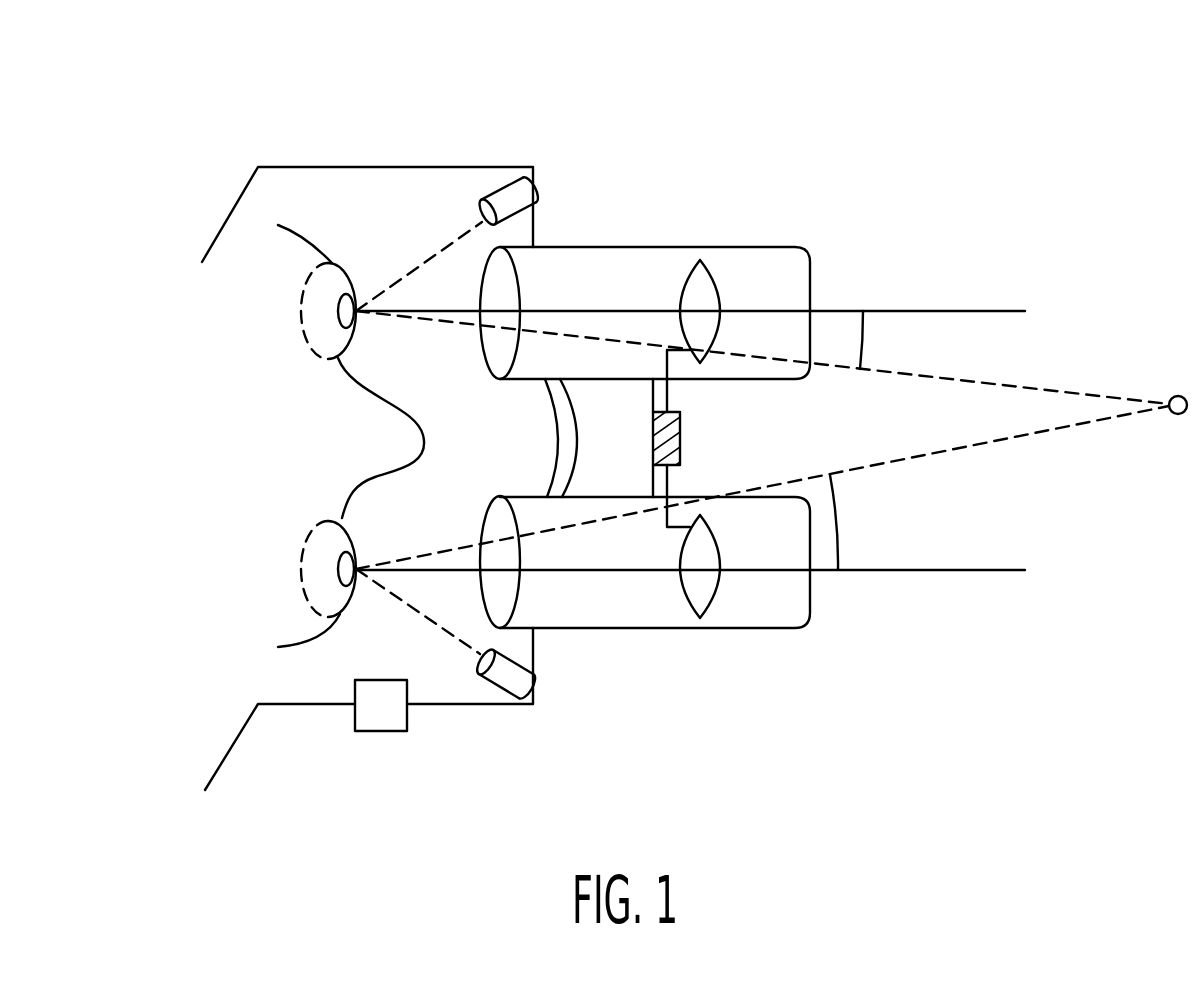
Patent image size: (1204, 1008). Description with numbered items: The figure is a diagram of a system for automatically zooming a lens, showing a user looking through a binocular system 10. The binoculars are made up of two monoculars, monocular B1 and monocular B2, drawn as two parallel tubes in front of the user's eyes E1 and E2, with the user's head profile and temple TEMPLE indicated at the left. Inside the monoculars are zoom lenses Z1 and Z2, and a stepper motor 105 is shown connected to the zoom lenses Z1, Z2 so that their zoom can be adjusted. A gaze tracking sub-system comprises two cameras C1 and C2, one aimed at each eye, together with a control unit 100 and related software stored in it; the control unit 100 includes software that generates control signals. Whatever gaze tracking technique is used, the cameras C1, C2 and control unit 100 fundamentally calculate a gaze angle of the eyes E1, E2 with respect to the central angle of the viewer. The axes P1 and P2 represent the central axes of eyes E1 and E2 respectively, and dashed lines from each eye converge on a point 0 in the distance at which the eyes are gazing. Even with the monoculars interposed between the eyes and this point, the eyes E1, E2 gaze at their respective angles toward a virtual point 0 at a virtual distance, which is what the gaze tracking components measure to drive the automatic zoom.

The binocular system 10 is at (917, 108).
The control unit 100 is at (388, 731).
The stepper motor 105 is at (715, 438).
The camera C1 is at (530, 194).
The camera C2 is at (532, 685).
The monocular B1 is at (632, 247).
The monocular B2 is at (768, 628).
The zoom lens Z1 is at (706, 260).
The zoom lens Z2 is at (707, 618).
The eye E1 is at (302, 311).
The eye E2 is at (302, 568).
The axis P1 is at (690, 293).
The axis P2 is at (690, 553).
The point 0 is at (775, 440).
The temple of head TEMPLE is at (352, 167).